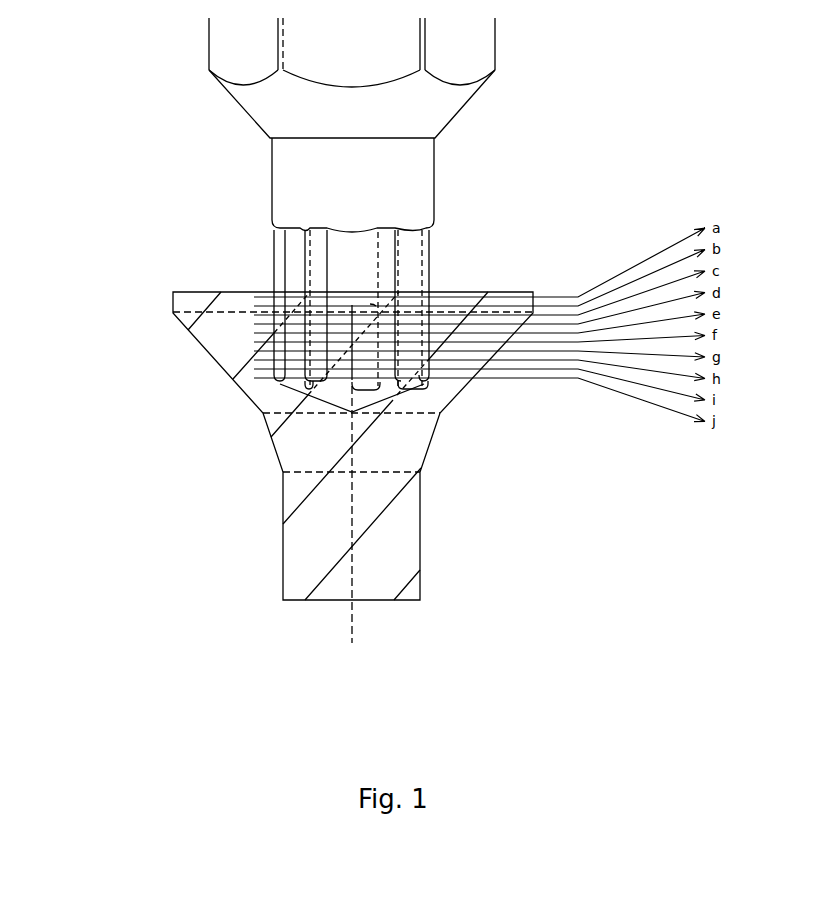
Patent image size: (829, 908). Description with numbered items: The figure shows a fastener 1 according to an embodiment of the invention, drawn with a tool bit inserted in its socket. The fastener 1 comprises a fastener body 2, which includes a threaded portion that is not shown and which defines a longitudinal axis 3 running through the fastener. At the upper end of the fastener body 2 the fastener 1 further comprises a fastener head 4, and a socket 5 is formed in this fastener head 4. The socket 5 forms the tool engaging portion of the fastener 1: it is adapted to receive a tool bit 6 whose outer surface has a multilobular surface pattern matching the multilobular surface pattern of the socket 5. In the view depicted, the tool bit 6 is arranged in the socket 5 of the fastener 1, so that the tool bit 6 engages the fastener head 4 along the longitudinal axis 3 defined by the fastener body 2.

The fastener 1 is at (183, 483).
The fastener body 2 is at (407, 557).
The longitudinal axis 3 is at (352, 575).
The fastener head 4 is at (228, 353).
The socket 5 is at (275, 325).
The tool bit 6 is at (413, 272).